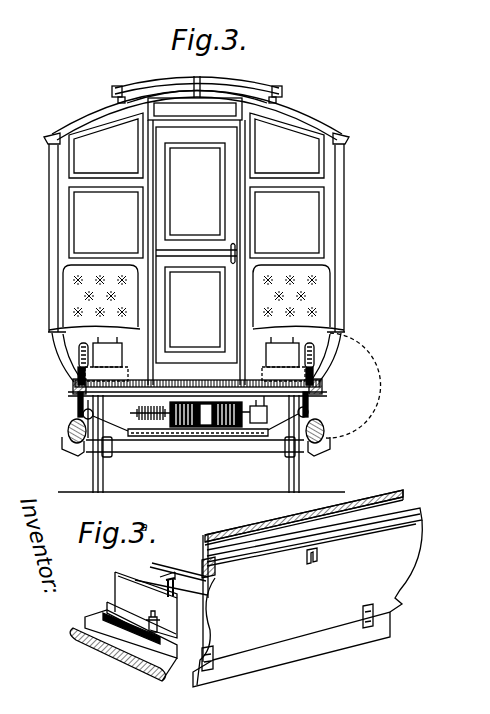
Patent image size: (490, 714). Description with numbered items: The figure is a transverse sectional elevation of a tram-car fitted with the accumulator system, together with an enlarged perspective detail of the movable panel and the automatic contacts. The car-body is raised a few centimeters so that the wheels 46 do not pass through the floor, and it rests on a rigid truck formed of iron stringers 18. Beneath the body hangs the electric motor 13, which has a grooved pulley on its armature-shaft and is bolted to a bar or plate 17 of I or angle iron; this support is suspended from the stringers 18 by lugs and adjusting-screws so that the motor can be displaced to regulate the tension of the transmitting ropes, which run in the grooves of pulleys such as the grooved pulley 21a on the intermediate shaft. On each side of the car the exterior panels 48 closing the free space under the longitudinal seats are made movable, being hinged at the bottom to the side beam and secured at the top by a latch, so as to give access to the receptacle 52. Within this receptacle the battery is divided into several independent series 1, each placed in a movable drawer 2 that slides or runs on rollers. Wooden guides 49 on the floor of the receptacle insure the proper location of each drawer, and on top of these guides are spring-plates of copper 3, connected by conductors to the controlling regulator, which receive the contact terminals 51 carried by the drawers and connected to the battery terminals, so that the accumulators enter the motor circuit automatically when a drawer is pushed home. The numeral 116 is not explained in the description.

In FIG. 3, the independent series 1 is at (196, 352).
In FIG. 3, the movable drawer 2 is at (115, 373).
In FIG. 3A, the movable drawer 2 is at (161, 600).
In FIG. 3A, the spring-plates of copper 3 is at (105, 608).
In FIG. 3, the electric motor 13 is at (205, 428).
In FIG. 3, the bar or plate 17 is at (148, 437).
In FIG. 3, the stringers 18 is at (78, 410).
In FIG. 3, the grooved pulley 21a is at (137, 413).
In FIG. 3, the wheels 46 is at (99, 474).
In FIG. 3, the exterior panels 48 is at (52, 338).
In FIG. 3A, the exterior panels 48 is at (400, 609).
In FIG. 3A, the wooden guides 49 is at (74, 623).
In FIG. 3, the contact terminals 51 is at (88, 348).
In FIG. 3A, the contact terminals 51 is at (152, 615).
In FIG. 3, the receptacle 52 is at (78, 364).
In FIG. 3, the wheel 116 is at (328, 473).